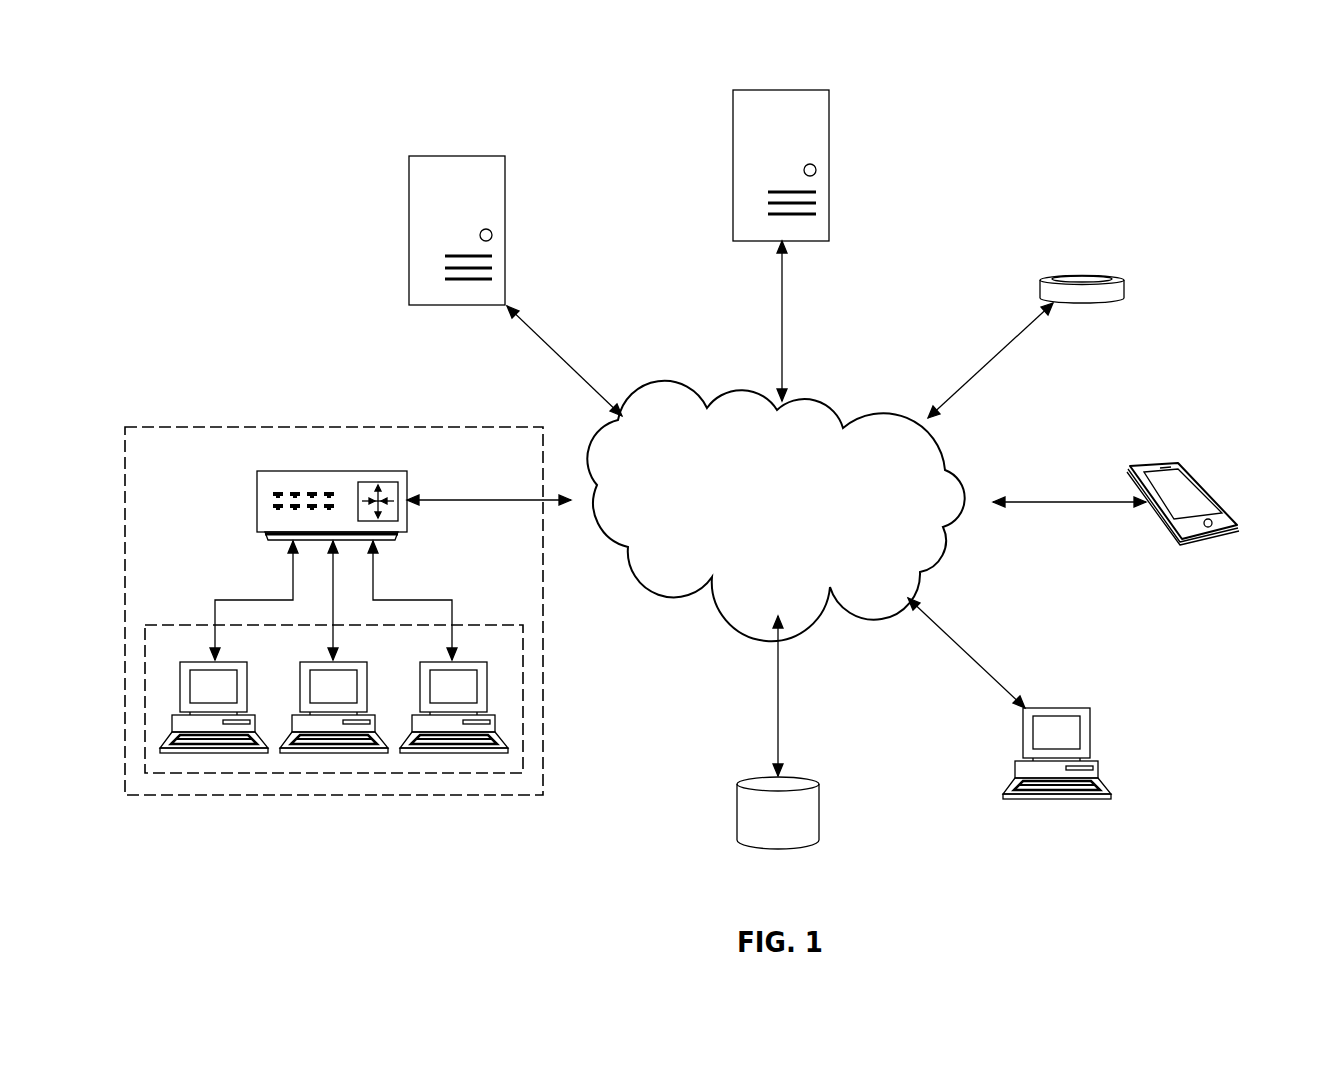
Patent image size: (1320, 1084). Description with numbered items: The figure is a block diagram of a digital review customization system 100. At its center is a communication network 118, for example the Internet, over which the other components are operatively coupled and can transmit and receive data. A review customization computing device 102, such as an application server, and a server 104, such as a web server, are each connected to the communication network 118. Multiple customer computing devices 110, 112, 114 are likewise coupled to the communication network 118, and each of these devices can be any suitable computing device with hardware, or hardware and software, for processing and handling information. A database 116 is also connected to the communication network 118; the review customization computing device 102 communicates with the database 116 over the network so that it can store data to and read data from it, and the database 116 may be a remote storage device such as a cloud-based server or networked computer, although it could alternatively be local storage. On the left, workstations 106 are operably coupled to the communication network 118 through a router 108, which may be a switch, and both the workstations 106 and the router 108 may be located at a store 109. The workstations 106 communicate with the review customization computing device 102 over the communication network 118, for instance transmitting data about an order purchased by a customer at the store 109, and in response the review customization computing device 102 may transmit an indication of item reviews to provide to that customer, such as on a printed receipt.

The digital review customization system 100 is at (1175, 75).
The review customization computing device 102 is at (797, 90).
The server 104 is at (433, 156).
The workstation(s) 106 is at (197, 623).
The router 108 is at (283, 470).
The store 109 is at (197, 427).
The customer computing device 110 is at (1093, 278).
The customer computing device 112 is at (1205, 489).
The customer computing device 114 is at (1083, 708).
The database 116 is at (808, 775).
The communication network 118 is at (822, 398).